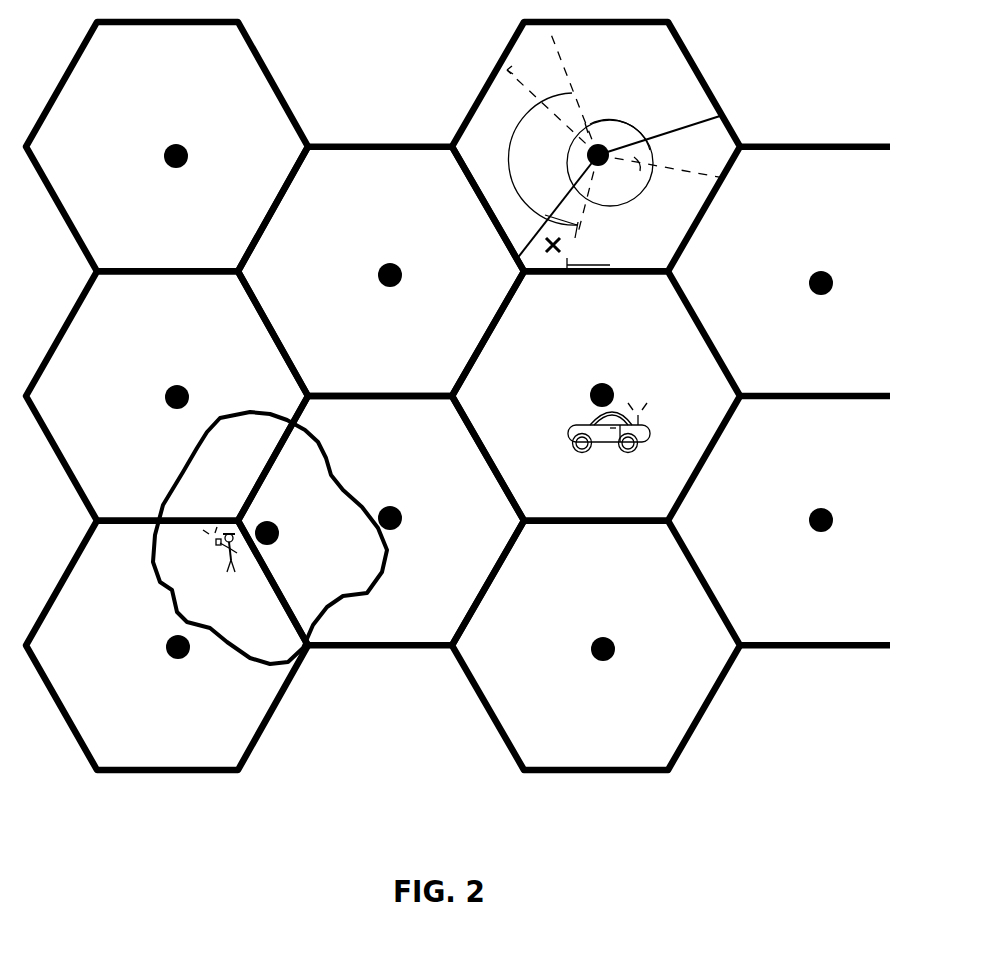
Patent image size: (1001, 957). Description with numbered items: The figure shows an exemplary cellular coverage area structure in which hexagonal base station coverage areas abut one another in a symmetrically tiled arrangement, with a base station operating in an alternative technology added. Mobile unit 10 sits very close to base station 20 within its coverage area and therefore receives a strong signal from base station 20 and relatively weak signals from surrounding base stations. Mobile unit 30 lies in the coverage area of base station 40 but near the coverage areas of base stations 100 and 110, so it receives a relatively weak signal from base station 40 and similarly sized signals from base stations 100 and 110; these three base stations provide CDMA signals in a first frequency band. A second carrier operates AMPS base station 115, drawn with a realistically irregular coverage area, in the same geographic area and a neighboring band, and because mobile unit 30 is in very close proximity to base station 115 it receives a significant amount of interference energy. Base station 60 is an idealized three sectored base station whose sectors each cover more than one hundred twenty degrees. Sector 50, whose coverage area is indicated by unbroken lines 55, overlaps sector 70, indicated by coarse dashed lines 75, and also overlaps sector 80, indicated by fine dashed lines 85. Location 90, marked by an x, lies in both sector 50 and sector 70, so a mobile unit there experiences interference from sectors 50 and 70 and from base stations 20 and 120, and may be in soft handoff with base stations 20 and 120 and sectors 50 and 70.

The mobile unit 10 is at (590, 425).
The base station 20 is at (605, 383).
The mobile unit 30 is at (229, 573).
The base station 40 is at (176, 658).
The sector 50 is at (641, 200).
The unbroken lines 55 is at (712, 122).
The base station 60 is at (584, 155).
The sector 70 is at (516, 137).
The coarse dashed lines 75 is at (562, 64).
The sector 80 is at (640, 119).
The fine dashed lines 85 is at (512, 70).
The location 90 is at (561, 246).
The base station 100 is at (190, 393).
The base station 110 is at (402, 515).
The AMPS base station 115 is at (272, 545).
The base station 120 is at (402, 272).